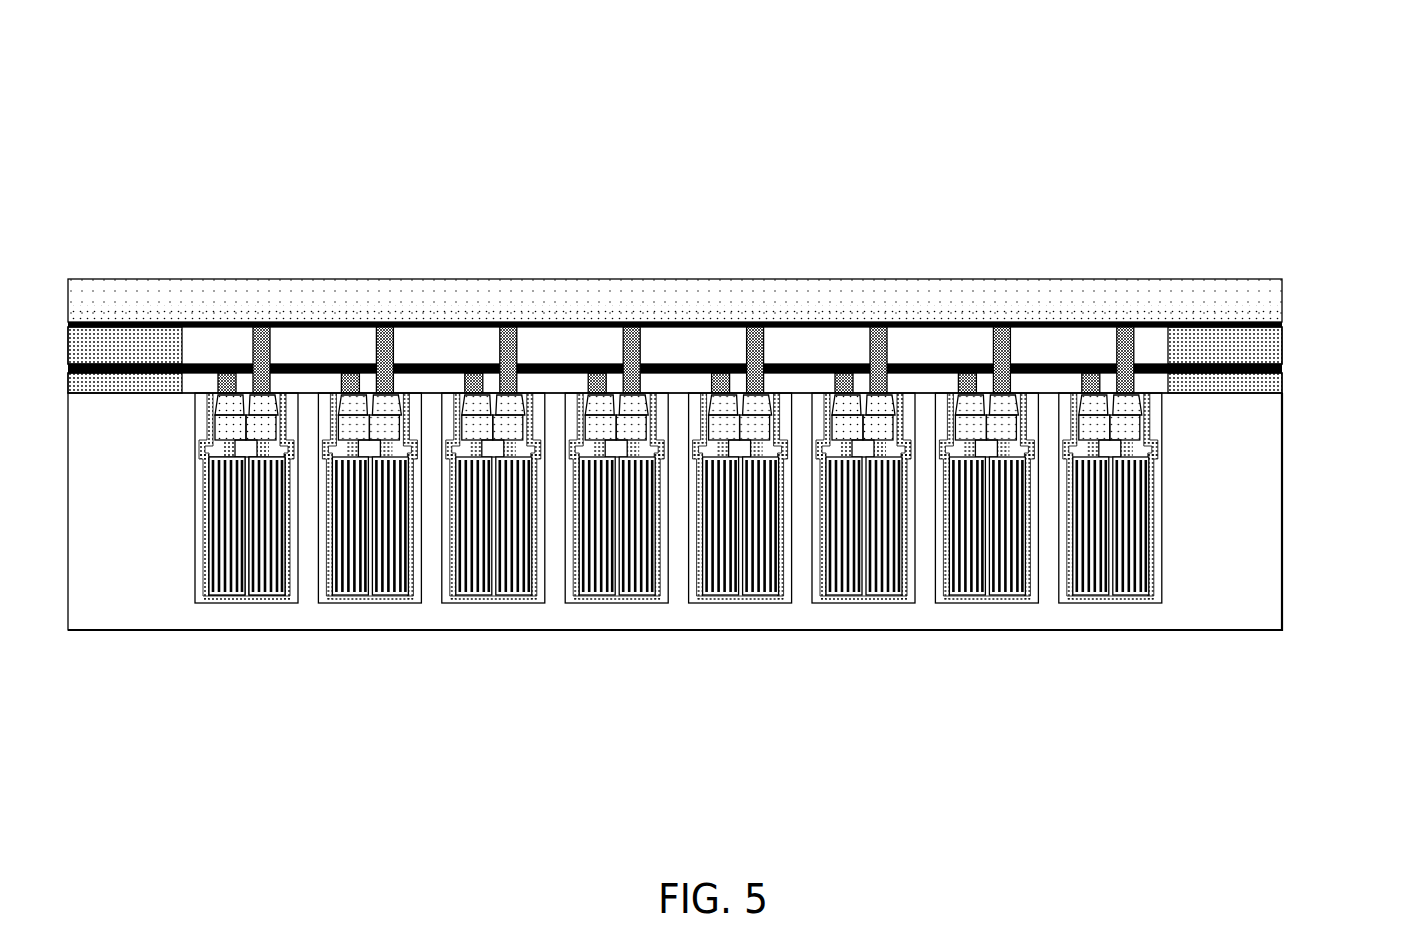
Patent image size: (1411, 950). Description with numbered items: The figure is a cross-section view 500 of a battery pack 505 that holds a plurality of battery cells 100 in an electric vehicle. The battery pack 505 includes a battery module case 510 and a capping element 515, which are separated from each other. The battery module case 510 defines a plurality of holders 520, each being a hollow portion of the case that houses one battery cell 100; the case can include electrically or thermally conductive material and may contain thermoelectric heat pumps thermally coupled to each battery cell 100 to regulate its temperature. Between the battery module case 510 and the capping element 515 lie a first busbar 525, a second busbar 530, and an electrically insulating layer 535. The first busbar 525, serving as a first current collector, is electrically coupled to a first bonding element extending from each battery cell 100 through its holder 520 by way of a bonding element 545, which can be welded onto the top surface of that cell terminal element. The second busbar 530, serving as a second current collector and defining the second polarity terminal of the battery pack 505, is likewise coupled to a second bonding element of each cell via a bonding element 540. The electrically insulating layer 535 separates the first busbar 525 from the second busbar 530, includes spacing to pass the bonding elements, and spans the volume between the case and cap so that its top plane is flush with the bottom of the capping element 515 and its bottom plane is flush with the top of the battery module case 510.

The cross-section view 500 is at (748, 64).
The battery pack 505 is at (1027, 271).
The capping element 515 is at (1259, 300).
The first busbar 525 is at (1292, 320).
The electrically insulating layer 535 is at (136, 345).
The second busbar 530 is at (1292, 368).
The bonding element 545 is at (264, 332).
The bonding element 540 is at (226, 363).
The battery module case 510 is at (1254, 490).
The holder 520 is at (293, 613).
The battery cell 100 is at (244, 613).